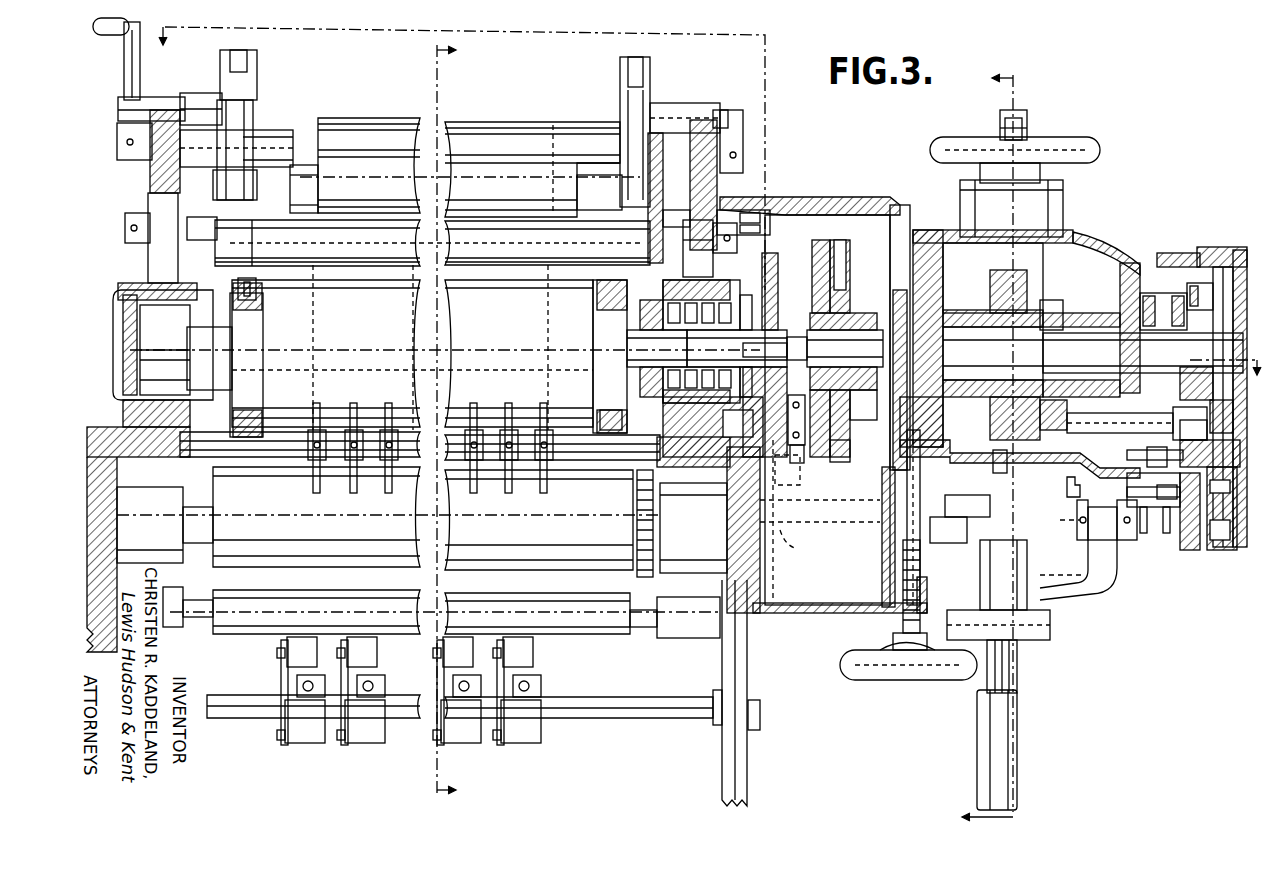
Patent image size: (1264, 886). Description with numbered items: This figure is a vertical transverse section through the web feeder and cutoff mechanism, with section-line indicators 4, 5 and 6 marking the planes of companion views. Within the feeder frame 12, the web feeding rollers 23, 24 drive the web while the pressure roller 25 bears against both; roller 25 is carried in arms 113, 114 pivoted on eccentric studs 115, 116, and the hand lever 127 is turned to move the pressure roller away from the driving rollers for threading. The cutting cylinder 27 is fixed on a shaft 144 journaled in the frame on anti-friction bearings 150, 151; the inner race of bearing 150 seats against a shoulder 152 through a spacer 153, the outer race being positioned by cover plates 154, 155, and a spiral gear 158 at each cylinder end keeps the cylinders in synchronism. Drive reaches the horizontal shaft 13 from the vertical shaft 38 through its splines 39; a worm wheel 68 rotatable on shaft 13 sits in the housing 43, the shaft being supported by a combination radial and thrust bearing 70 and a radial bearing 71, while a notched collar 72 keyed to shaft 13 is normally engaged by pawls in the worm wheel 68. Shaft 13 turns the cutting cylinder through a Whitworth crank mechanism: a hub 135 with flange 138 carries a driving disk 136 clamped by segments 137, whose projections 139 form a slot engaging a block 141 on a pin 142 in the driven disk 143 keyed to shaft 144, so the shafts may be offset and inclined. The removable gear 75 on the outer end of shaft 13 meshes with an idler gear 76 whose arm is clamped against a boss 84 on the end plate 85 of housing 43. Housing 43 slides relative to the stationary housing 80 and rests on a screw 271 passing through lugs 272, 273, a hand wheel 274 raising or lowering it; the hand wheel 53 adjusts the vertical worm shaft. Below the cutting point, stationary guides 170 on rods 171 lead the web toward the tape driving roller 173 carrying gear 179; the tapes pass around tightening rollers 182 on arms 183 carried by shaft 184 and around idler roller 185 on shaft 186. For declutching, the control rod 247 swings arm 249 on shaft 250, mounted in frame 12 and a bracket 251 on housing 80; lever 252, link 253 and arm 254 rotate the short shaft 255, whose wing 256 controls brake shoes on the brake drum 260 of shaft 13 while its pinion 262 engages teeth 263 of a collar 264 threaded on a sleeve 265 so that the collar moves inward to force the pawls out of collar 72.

The section line 4- 4 is at (708, 212).
The section line 5- 5 is at (976, 443).
The section line 6- 6 is at (454, 421).
The feeder frame 12 is at (745, 680).
The horizontal shaft 13 is at (1093, 353).
The web feeding roller 23 is at (288, 124).
The web feeding roller 24 is at (276, 266).
The idler roller 25 is at (309, 172).
The cutting cylinder 27 is at (445, 351).
The vertical shaft 38 is at (1017, 746).
The splines 39 is at (1017, 673).
The housing 43 is at (1072, 488).
The hand wheel 53 is at (1100, 150).
The worm wheel 68 is at (990, 290).
The combination radial and thrust anti-friction bearing 70 is at (893, 300).
The radial bearing 71 is at (1135, 318).
The collar 72 is at (1046, 316).
The gear 75 is at (1228, 250).
The idler gear 76 is at (1212, 540).
The housing 80 is at (828, 617).
The boss 84 is at (1167, 533).
The end plate 85 is at (1140, 270).
The arm 113 is at (628, 146).
The arm 114 is at (244, 137).
The stud 115 is at (678, 110).
The stud 116 is at (196, 97).
The hand lever 127 is at (132, 76).
The hub 135 is at (847, 412).
The driving disk 136 is at (813, 268).
The clamping segments 137 is at (842, 250).
The flange 138 is at (840, 425).
The projections 139 is at (795, 458).
The block 141 is at (796, 395).
The pin 142 is at (710, 432).
The driven disk 143 is at (778, 284).
The shaft 144 is at (738, 332).
The anti-friction bearing 150 is at (690, 300).
The anti-friction bearing 151 is at (172, 355).
The shoulder 152 is at (665, 342).
The spacer 153 is at (743, 345).
The cover plate 154 is at (650, 300).
The cover plate 155 is at (745, 295).
The spiral gear 158 is at (238, 282).
The stationary guides 170 is at (385, 486).
The rods 171 is at (242, 455).
The tape driving roller 173 is at (579, 478).
The gear 179 is at (645, 578).
The tightening rollers 182 is at (540, 665).
The bracket 183 is at (503, 743).
The shaft 184 is at (628, 708).
The idler roller 185 is at (615, 638).
The shaft 186 is at (648, 640).
The control rod 247 is at (790, 485).
The arm 249 is at (820, 520).
The shaft 250 is at (937, 522).
The bracket 251 is at (1092, 583).
The lever 252 is at (1133, 540).
The link 253 is at (1160, 467).
The arm 254 is at (1188, 431).
The short shaft 255 is at (1100, 432).
The wing 256 is at (1192, 445).
The brake drum 260 is at (1203, 290).
The pinion 262 is at (1062, 461).
The wide teeth 263 is at (1095, 312).
The collar 264 is at (1054, 415).
The sleeve 265 is at (1079, 380).
The screw 271 is at (907, 565).
The lug 272 is at (885, 485).
The lug 273 is at (927, 584).
The hand wheel 274 is at (912, 674).